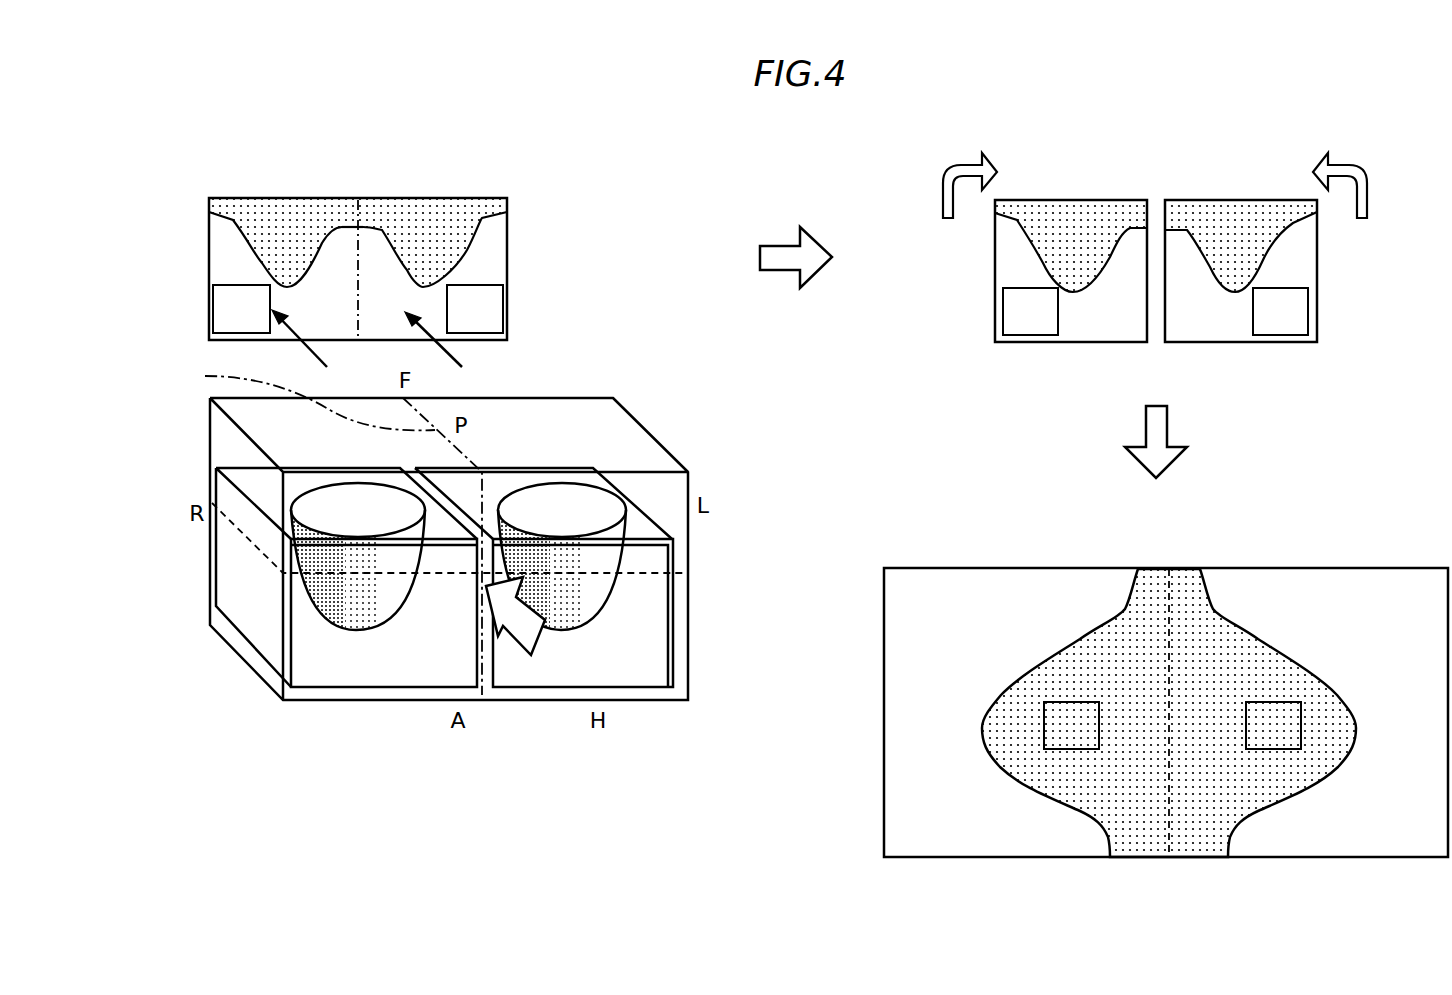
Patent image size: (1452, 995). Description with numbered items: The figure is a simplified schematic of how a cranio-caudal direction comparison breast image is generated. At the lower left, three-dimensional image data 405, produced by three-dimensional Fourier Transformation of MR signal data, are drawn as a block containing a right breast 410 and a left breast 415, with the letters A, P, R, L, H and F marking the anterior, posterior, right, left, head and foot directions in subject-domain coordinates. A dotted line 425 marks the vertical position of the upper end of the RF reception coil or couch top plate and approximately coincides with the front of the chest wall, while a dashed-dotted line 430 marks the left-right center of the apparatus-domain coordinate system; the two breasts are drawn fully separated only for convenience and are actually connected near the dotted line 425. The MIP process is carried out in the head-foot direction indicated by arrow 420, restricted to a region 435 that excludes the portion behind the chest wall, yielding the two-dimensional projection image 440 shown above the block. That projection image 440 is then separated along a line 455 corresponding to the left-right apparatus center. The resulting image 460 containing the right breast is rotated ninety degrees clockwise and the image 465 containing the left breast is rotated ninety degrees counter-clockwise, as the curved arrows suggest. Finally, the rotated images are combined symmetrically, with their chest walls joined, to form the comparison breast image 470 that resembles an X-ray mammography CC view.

The three-dimensional image data 405 is at (305, 700).
The right breast 410 is at (354, 630).
The left breast 415 is at (570, 614).
The arrow 420 is at (523, 660).
The dotted line 425 is at (270, 558).
The dashed-dotted line 430 is at (299, 398).
The region 435 is at (234, 490).
The two-dimensional projection image 440 is at (252, 198).
The line 455 is at (360, 248).
The image including the right breast 460 is at (1045, 200).
The image including the left breast 465 is at (1262, 200).
The comparison breast image 470 is at (937, 568).